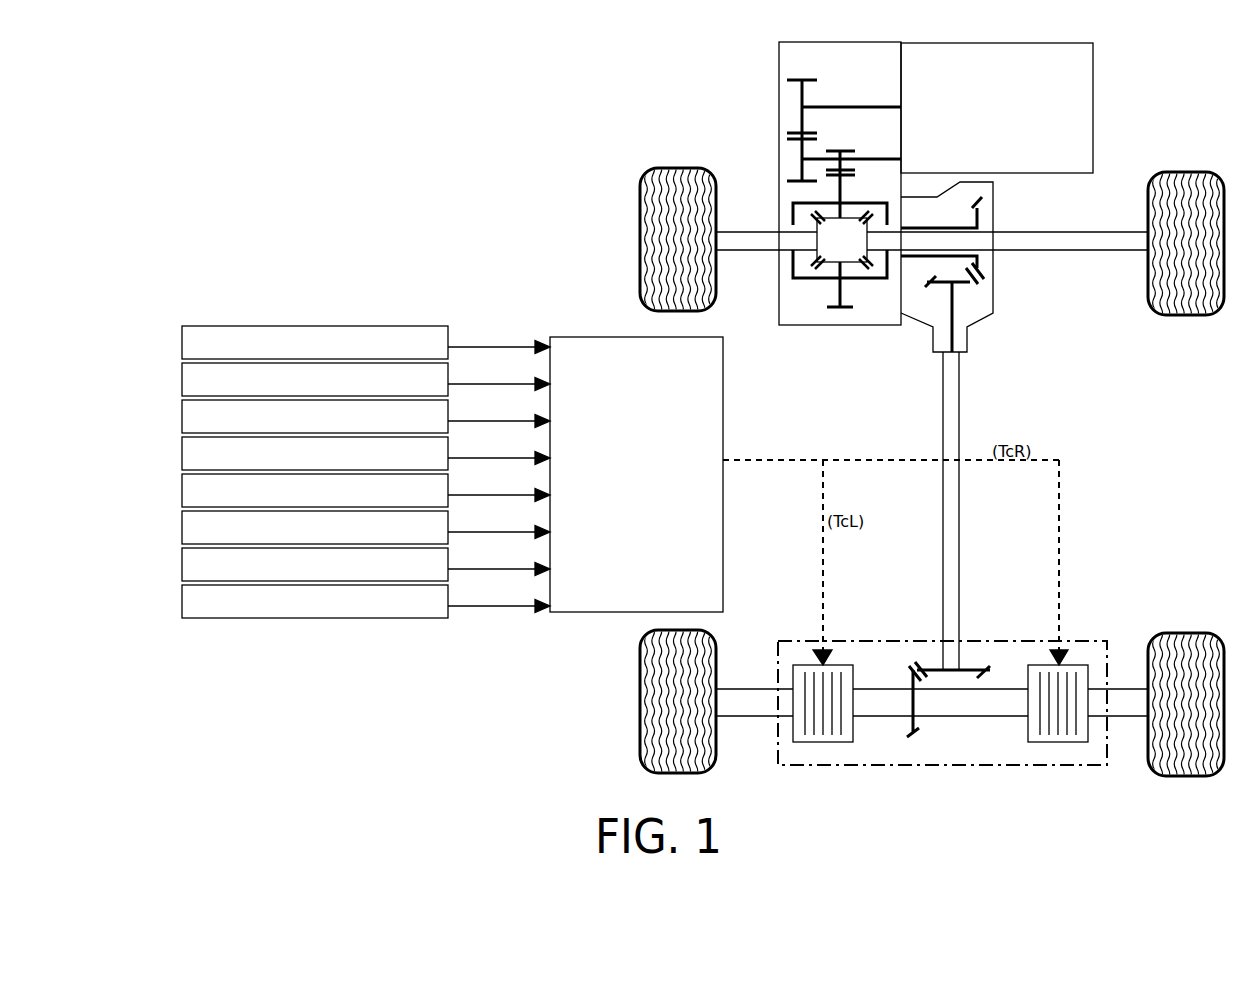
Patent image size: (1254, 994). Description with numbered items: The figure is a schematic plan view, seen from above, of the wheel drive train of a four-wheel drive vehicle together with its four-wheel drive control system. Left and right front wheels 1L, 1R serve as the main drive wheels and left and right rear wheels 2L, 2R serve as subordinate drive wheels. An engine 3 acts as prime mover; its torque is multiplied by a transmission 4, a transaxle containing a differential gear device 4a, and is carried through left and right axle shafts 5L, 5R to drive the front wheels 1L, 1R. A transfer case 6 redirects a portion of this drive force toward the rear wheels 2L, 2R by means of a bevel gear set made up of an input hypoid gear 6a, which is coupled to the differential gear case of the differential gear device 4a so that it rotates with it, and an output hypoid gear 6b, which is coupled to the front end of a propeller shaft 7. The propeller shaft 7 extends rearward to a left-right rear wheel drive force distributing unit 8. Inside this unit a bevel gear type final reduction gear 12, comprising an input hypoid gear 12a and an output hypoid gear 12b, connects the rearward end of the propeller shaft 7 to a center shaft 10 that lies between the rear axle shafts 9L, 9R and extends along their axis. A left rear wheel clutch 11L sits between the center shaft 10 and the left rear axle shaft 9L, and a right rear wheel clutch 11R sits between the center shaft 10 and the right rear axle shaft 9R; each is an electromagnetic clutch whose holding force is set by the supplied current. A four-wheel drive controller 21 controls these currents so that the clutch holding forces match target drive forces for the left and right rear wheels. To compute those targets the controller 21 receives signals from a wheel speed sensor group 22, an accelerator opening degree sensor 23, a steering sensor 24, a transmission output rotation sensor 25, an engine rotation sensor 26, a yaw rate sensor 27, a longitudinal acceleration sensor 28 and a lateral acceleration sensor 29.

The left front wheel 1L is at (665, 168).
The right front wheel 1R is at (1190, 172).
The left rear wheel 2L is at (640, 660).
The right rear wheel 2R is at (1190, 633).
The engine 3 is at (1093, 57).
The transmission 4 is at (779, 58).
The differential gear device 4a is at (803, 280).
The left axle shaft 5L is at (750, 232).
The right axle shaft 5R is at (1084, 232).
The transfer case 6 is at (993, 295).
The input hypoid gear 6a is at (978, 266).
The output hypoid gear 6b is at (966, 284).
The propeller shaft 7 is at (959, 400).
The left-right rear wheel drive force distributing unit 8 is at (1010, 641).
The left rear wheel axle shaft 9L is at (750, 717).
The right rear wheel axle shaft 9R is at (1132, 717).
The center shaft 10 is at (987, 717).
The left rear wheel clutch 11L is at (817, 742).
The right rear wheel clutch 11R is at (1068, 742).
The final reduction gear 12 is at (893, 590).
The input hypoid gear 12a is at (917, 667).
The output hypoid gear 12b is at (905, 672).
The four-wheel drive controller 21 is at (574, 337).
The wheel speed sensor group 22 is at (182, 338).
The accelerator opening degree sensor 23 is at (182, 375).
The steering sensor 24 is at (182, 412).
The transmission output rotation sensor 25 is at (182, 449).
The engine rotation sensor 26 is at (182, 486).
The yaw rate sensor 27 is at (182, 523).
The longitudinal acceleration sensor 28 is at (182, 560).
The lateral acceleration sensor 29 is at (182, 597).